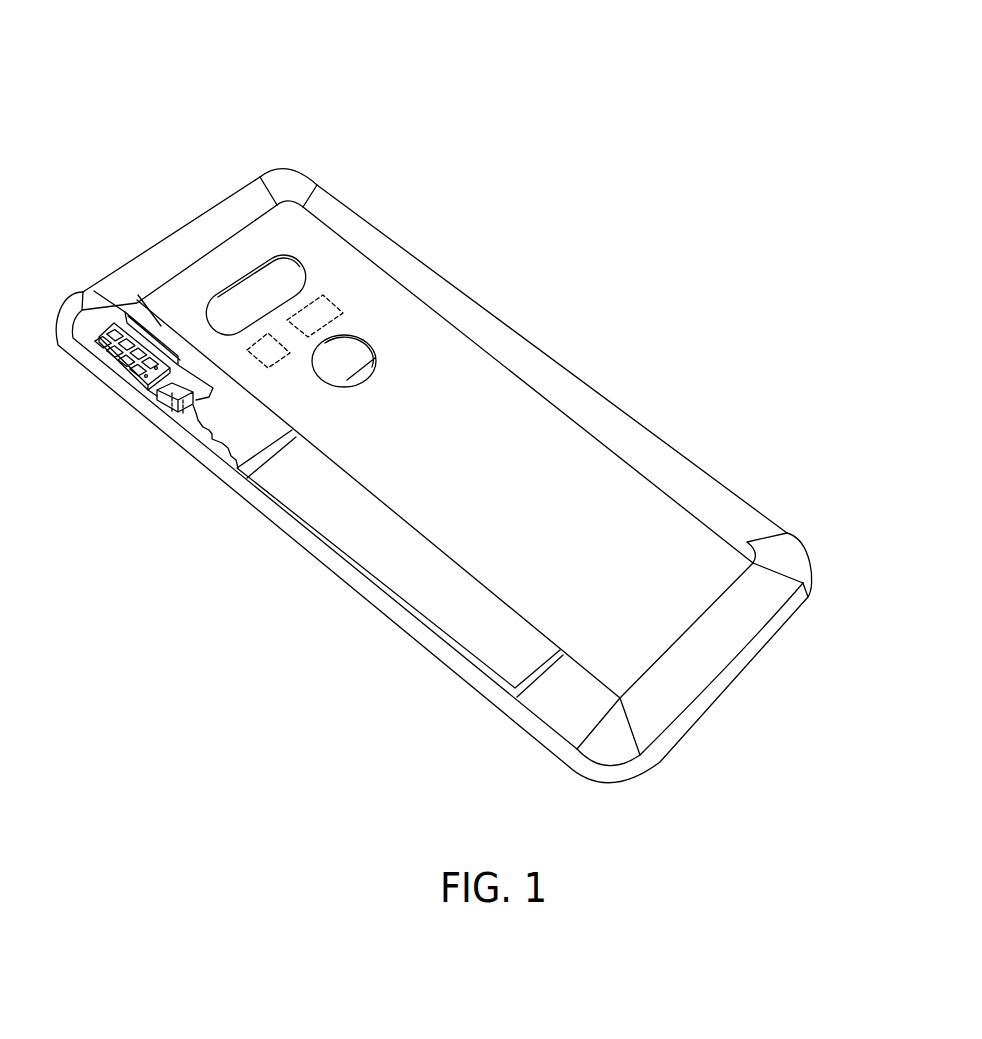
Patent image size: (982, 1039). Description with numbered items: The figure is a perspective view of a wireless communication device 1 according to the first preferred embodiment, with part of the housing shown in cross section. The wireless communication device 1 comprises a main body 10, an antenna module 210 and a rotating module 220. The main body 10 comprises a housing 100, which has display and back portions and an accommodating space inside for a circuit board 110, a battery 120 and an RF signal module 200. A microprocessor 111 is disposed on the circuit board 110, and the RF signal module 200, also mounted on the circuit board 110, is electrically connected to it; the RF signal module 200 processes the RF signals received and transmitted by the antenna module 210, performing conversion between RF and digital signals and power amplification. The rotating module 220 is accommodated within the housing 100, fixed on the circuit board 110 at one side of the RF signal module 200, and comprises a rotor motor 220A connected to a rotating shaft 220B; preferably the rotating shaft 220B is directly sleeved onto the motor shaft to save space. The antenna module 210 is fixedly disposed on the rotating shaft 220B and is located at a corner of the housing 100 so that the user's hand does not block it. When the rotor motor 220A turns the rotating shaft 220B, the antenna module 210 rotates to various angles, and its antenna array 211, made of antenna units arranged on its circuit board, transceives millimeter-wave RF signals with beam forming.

The wireless communication device 1 is at (107, 44).
The main body 10 is at (478, 67).
The housing 100 is at (287, 168).
The circuit board 110 is at (247, 425).
The microprocessor 111 is at (326, 312).
The battery 120 is at (323, 513).
The RF signal module 200 is at (252, 350).
The antenna module 210 is at (108, 333).
The antenna array 211 is at (100, 345).
The rotating module 220 is at (173, 395).
The rotor motor 220A is at (185, 410).
The rotating shaft 220B is at (157, 385).